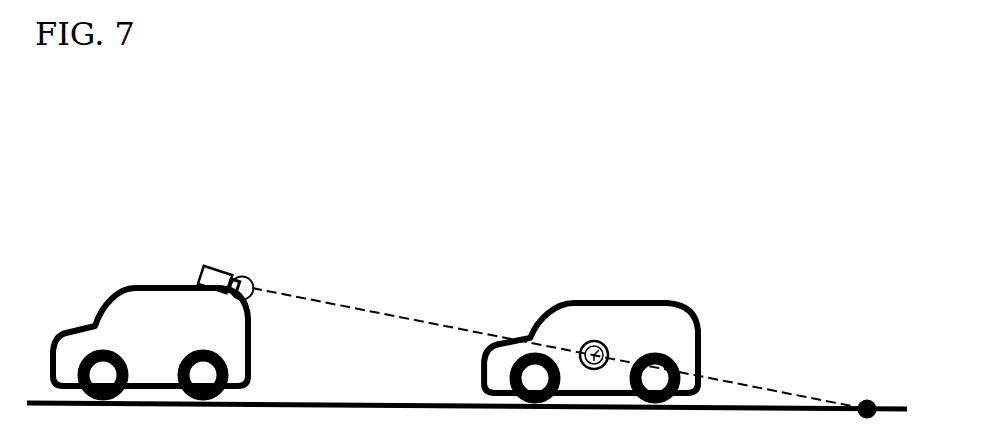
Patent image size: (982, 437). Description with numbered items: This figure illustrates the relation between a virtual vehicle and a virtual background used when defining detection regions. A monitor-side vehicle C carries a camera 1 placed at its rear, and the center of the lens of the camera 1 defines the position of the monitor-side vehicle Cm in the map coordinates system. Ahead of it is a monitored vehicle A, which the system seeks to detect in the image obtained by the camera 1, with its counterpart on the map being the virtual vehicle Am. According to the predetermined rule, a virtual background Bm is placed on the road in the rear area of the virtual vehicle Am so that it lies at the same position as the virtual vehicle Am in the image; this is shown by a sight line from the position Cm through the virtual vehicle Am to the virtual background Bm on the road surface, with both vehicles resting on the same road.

The camera 1 is at (215, 266).
The monitor-side vehicle C is at (116, 290).
The position of the monitor-side vehicle Cm is at (252, 280).
The monitored vehicle A is at (548, 304).
The virtual vehicle Am is at (596, 341).
The virtual background Bm is at (864, 400).